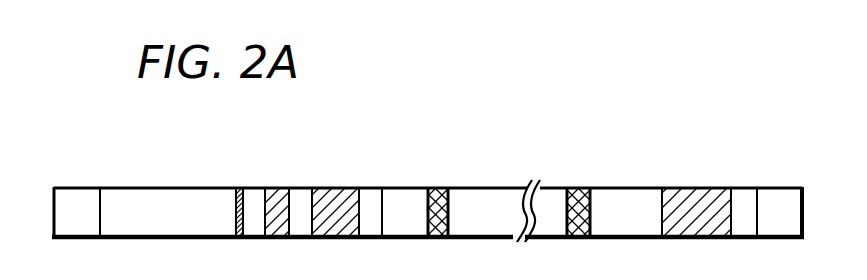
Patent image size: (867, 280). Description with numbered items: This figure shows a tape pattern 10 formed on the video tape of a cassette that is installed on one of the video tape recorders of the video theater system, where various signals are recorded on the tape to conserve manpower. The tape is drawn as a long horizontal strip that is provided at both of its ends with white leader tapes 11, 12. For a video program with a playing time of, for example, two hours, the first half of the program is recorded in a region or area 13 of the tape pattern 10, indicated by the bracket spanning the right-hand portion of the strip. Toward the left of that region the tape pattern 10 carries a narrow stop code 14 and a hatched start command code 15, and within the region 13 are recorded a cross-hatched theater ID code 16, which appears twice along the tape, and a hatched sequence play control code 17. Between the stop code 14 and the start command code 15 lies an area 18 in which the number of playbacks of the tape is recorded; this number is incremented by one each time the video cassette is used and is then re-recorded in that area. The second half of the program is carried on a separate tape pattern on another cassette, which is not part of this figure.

The tape pattern 10 is at (184, 140).
The white leader tape 11 is at (76, 197).
The white leader tape 12 is at (786, 197).
The region 13 is at (383, 133).
The stop code 14 is at (239, 191).
The start command code 15 is at (335, 196).
The theater ID code 16 is at (438, 192).
The sequence play control code 17 is at (697, 196).
The area 18 is at (280, 193).